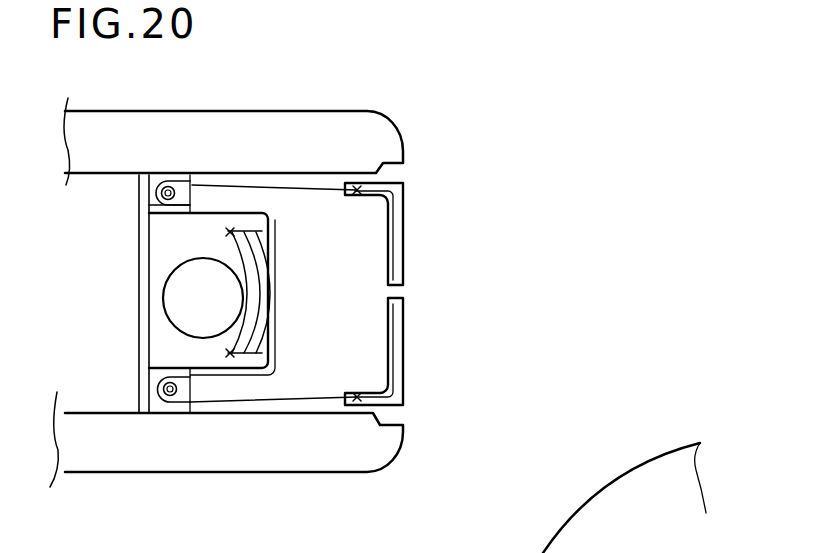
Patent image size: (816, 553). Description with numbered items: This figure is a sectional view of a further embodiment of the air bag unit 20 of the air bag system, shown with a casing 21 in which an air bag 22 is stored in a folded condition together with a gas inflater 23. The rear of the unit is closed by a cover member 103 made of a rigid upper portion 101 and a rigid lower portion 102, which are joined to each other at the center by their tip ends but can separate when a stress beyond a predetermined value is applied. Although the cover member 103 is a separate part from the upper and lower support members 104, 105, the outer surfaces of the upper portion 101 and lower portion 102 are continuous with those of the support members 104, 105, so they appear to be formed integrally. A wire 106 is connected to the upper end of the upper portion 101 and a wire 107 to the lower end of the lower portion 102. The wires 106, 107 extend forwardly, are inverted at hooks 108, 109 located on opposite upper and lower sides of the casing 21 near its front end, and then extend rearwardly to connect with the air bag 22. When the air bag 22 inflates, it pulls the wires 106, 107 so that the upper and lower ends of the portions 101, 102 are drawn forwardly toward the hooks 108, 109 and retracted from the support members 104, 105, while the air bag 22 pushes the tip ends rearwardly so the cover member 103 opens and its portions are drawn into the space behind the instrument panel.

The air bag unit 20 is at (378, 90).
The casing 21 is at (210, 214).
The air bag 22 is at (266, 278).
The gas inflater 23 is at (163, 294).
The upper portion 101 is at (405, 187).
The lower portion 102 is at (407, 318).
The cover member 103 is at (450, 287).
The support member 104 is at (383, 130).
The support member 105 is at (399, 452).
The wire 106 is at (309, 190).
The wire 107 is at (291, 397).
The hook 108 is at (160, 199).
The hook 109 is at (160, 386).